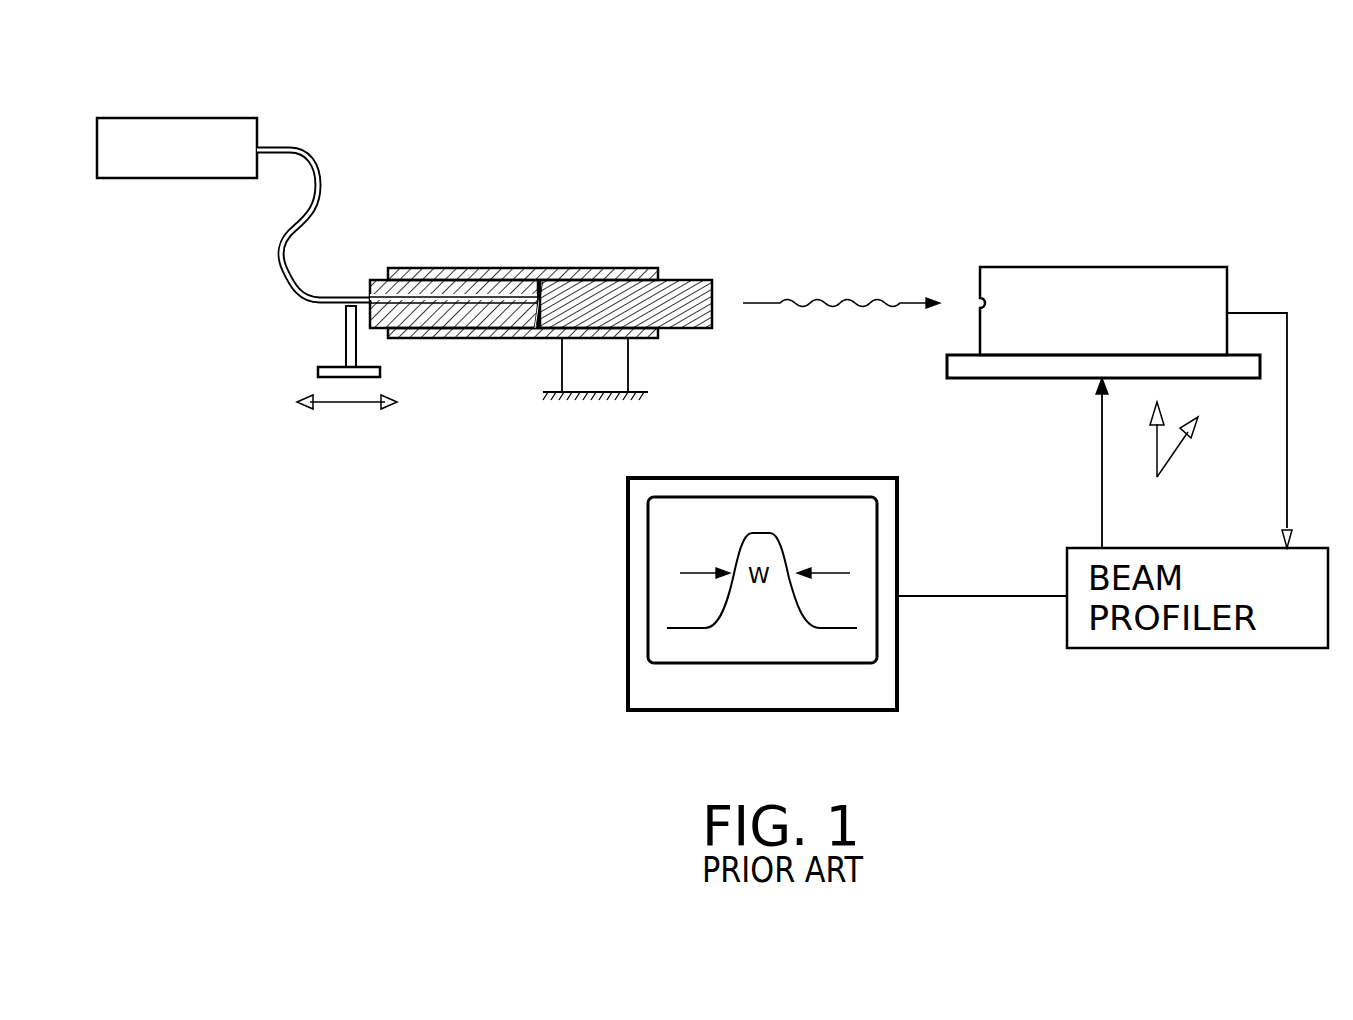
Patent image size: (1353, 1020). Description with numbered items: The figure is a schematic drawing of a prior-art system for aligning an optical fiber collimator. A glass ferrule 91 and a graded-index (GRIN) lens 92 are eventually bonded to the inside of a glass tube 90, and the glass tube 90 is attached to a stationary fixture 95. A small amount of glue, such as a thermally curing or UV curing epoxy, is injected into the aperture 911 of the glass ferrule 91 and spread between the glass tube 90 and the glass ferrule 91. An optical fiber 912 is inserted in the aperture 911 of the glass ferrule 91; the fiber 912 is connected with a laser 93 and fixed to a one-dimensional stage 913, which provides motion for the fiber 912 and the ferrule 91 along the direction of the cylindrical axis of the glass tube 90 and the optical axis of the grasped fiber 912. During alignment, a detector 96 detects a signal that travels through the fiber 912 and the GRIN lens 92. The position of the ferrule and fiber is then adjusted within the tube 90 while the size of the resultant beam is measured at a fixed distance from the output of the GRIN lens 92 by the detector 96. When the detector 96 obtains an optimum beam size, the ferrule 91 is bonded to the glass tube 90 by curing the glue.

The glass tube 90 is at (580, 267).
The glass ferrule 91 is at (373, 277).
The aperture 911 is at (470, 297).
The graded-index (GRIN) lens 92 is at (683, 280).
The laser 93 is at (188, 118).
The stationary fixture 95 is at (630, 368).
The detector 96 is at (1098, 265).
The optical fiber 912 is at (287, 285).
The one-dimensional stage 913 is at (383, 375).